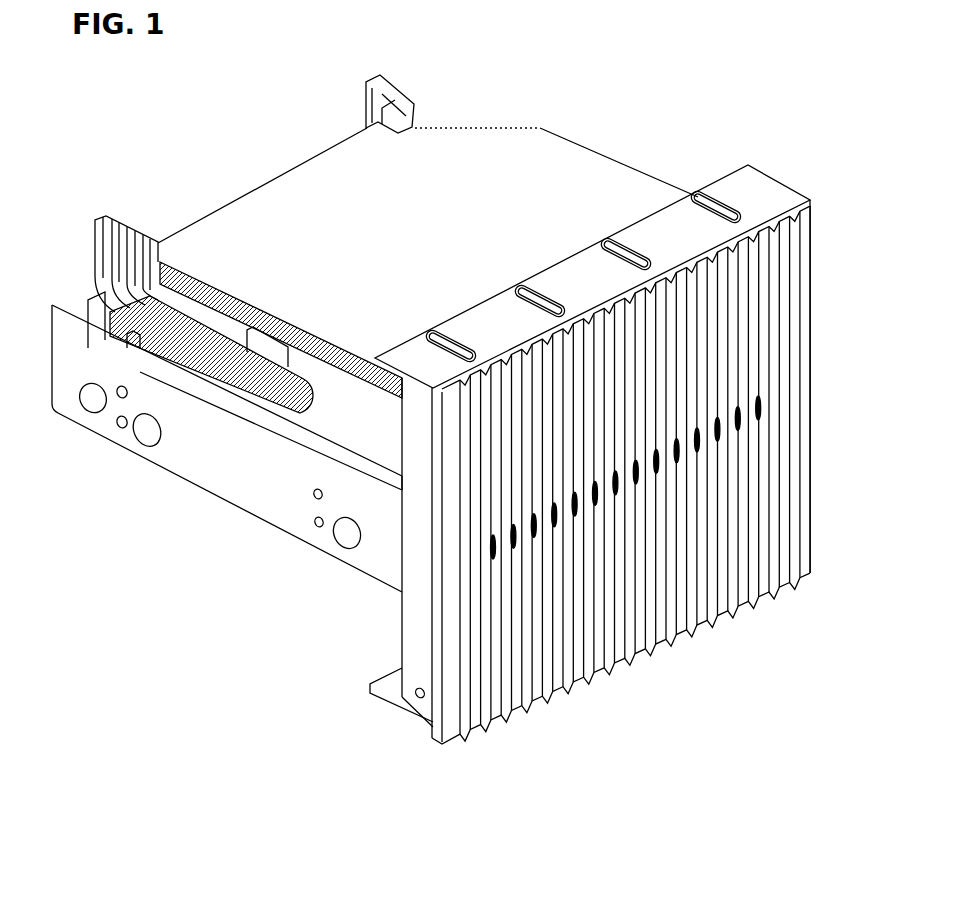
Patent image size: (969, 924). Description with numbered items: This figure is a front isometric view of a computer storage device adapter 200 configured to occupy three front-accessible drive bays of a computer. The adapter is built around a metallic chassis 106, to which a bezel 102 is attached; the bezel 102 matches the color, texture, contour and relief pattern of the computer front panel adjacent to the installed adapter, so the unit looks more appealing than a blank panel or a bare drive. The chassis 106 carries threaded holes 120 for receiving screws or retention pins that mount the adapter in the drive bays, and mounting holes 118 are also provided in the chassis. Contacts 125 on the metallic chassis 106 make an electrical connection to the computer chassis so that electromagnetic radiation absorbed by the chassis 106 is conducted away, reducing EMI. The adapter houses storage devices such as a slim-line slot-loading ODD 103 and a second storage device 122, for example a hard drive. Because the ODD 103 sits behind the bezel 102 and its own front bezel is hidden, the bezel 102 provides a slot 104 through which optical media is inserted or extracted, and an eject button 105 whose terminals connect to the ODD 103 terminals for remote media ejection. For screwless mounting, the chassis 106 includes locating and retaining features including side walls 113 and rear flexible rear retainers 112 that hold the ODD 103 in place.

The heat sink assembly 200 is at (619, 426).
The bezel 102 is at (450, 728).
The slim-line ODD 103 is at (606, 158).
The slot 104 is at (784, 268).
The eject button 105 is at (710, 357).
The metallic chassis 106 is at (203, 468).
The rear flexible rear retainers 112 is at (386, 76).
The side walls 113 is at (197, 297).
The mounting hole 118 is at (90, 408).
The threaded holes 120 is at (318, 527).
The storage device 122 is at (88, 305).
The contacts 125 is at (722, 196).